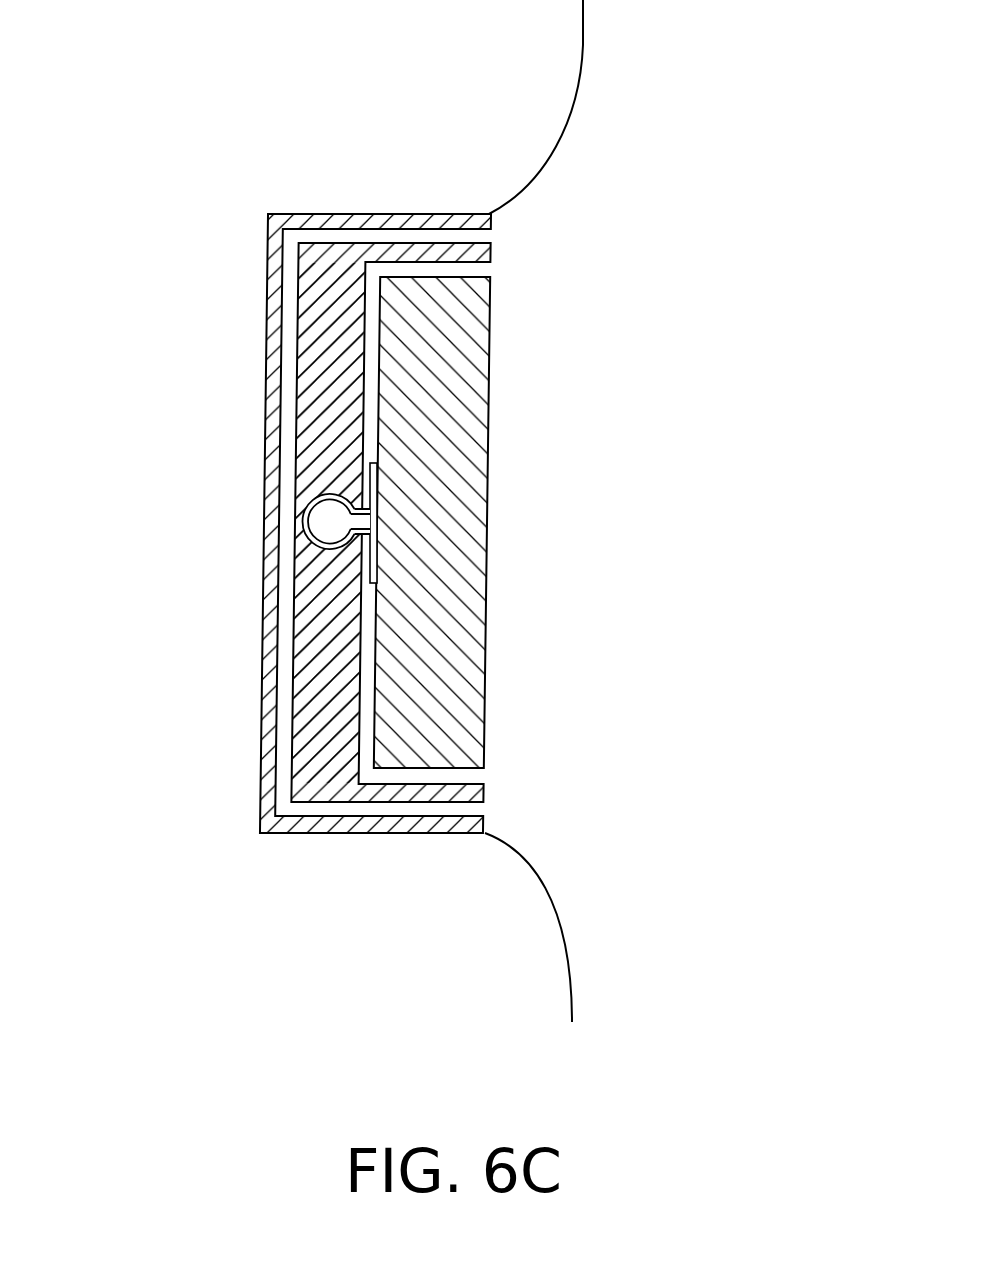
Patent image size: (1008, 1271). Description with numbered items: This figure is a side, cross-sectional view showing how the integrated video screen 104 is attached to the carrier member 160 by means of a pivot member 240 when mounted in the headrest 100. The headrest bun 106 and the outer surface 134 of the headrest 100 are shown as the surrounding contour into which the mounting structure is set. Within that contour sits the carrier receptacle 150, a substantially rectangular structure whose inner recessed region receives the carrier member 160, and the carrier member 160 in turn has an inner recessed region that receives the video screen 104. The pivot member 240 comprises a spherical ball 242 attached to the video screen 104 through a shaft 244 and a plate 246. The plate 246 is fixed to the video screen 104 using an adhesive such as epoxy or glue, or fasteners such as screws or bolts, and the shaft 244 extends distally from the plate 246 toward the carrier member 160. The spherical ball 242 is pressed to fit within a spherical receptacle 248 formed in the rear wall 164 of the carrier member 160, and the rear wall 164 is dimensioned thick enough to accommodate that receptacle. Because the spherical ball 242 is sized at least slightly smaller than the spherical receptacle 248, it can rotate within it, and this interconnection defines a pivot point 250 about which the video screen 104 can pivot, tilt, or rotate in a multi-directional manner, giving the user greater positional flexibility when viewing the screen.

The adjustable headrest 100 is at (684, 142).
The integrated video screen 104 is at (472, 443).
The headrest bun 106 is at (543, 58).
The outer surface 134 is at (558, 908).
The carrier receptacle 150 is at (308, 217).
The carrier member 160 is at (443, 569).
The rear planar wall 164 is at (311, 752).
The pivot member 240 is at (271, 511).
The spherical ball 242 is at (323, 550).
The shaft 244 is at (367, 522).
The plate 246 is at (370, 478).
The spherical receptacle 248 is at (328, 532).
The pivot point 250 is at (222, 520).